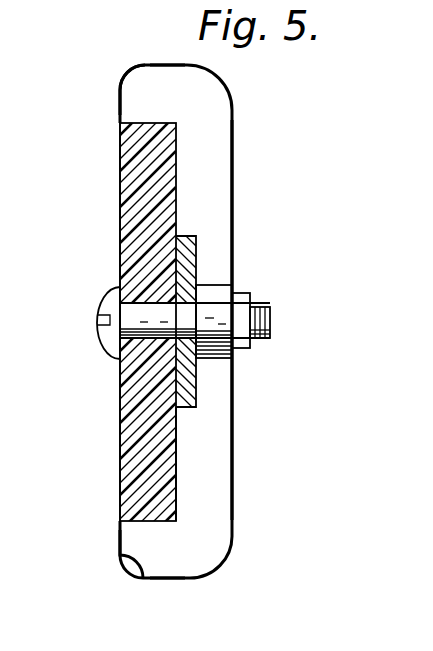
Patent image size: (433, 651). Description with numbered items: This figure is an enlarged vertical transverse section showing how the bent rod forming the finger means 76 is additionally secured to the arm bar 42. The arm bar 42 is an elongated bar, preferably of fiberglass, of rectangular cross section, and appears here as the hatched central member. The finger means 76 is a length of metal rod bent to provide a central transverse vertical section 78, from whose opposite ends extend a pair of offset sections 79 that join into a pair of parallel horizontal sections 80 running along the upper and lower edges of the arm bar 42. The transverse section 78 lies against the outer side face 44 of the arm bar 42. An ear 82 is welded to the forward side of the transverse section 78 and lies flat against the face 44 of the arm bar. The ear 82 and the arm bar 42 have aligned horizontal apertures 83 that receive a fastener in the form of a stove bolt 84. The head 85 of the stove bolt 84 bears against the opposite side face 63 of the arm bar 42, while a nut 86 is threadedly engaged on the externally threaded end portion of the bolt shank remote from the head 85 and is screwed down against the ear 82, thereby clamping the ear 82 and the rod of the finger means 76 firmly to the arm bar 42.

The arm bar 42 is at (120, 222).
The outer side face 44 is at (177, 455).
The side face 63 is at (120, 456).
The finger means 76 is at (237, 155).
The central transverse vertical section 78 is at (233, 213).
The offset sections 79 is at (166, 69).
The parallel horizontal sections 80 is at (120, 97).
The ear 82 is at (188, 259).
The alined horizontal apertures 83 is at (131, 305).
The stove bolt 84 is at (270, 315).
The head 85 is at (98, 311).
The nut 86 is at (249, 293).